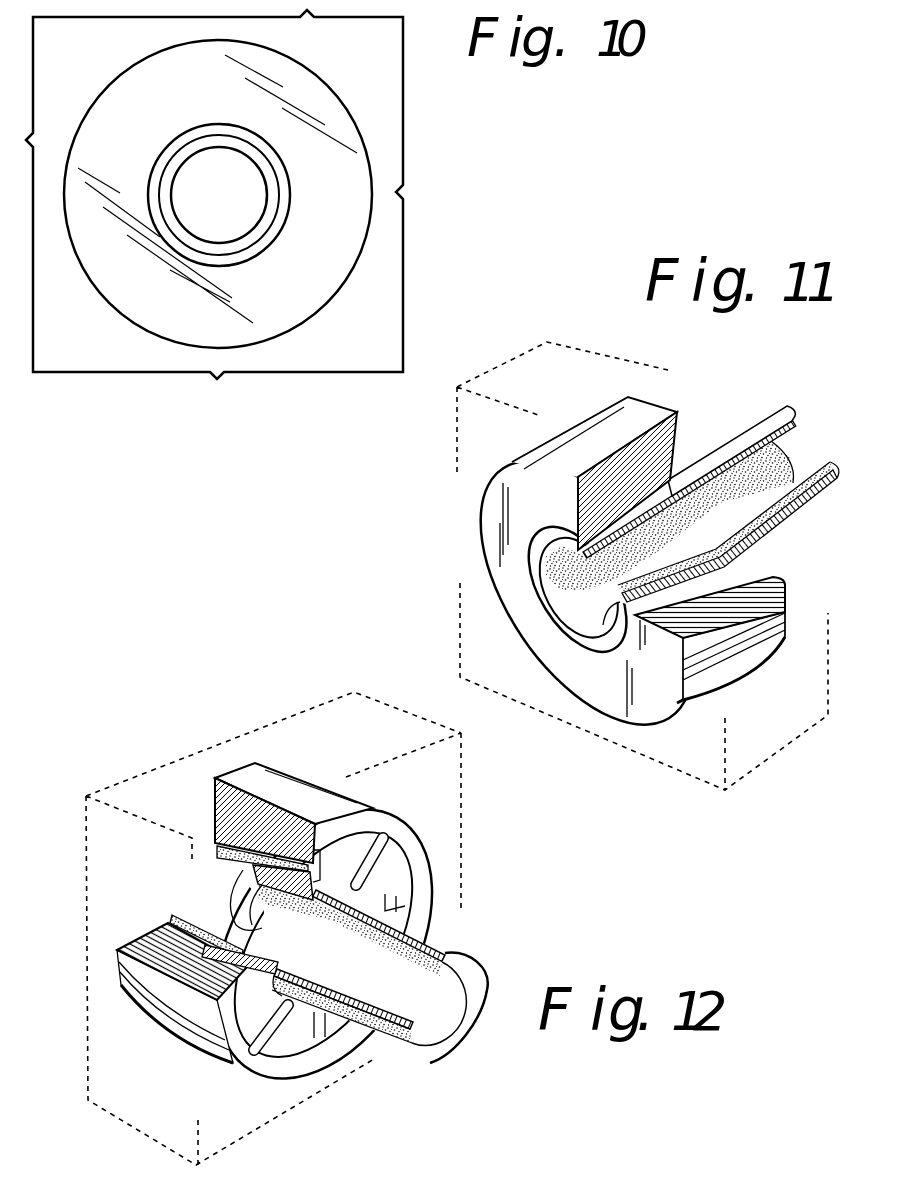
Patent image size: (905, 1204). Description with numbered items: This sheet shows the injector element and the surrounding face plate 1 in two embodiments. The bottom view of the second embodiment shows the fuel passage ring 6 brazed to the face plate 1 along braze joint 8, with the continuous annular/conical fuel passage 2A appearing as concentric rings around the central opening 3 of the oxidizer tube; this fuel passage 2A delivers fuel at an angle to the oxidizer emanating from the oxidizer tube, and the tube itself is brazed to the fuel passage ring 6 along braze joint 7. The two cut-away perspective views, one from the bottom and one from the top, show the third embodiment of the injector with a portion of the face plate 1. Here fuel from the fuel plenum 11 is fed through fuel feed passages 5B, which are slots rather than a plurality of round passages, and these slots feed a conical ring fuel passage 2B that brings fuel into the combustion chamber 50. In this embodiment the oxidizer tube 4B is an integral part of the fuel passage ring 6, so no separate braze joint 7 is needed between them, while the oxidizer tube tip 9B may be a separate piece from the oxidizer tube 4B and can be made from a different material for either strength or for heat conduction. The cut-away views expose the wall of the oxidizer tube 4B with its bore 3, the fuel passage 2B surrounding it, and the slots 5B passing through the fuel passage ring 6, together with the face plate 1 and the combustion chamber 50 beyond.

In FIG. 10, the face plate 1 is at (90, 373).
In FIG. 11, the face plate 1 is at (500, 695).
In FIG. 12, the face plate 1 is at (155, 1140).
In FIG. 10, the continuous annular/conical fuel passage 2A is at (268, 240).
In FIG. 11, the conical ring fuel passage 2B is at (683, 600).
In FIG. 12, the conical ring fuel passage 2B is at (240, 964).
In FIG. 10, the tube 3 is at (221, 204).
In FIG. 11, the tube 3 is at (812, 470).
In FIG. 12, the tube 3 is at (446, 1030).
In FIG. 11, the oxidizer tube 4B is at (697, 448).
In FIG. 12, the oxidizer tube 4B is at (301, 1029).
In FIG. 11, the fuel feed passages 5B is at (747, 577).
In FIG. 12, the fuel feed passages 5B is at (366, 891).
In FIG. 10, the fuel passage ring 6 is at (222, 104).
In FIG. 11, the fuel passage ring 6 is at (492, 555).
In FIG. 12, the fuel passage ring 6 is at (265, 1069).
In FIG. 12, the braze joint 7 is at (330, 850).
In FIG. 10, the braze joint 8 is at (103, 302).
In FIG. 11, the braze joint 8 is at (597, 420).
In FIG. 11, the oxidizer tube tip 9B is at (625, 590).
In FIG. 12, the oxidizer tube tip 9B is at (224, 861).
In FIG. 12, the fuel plenum 11 is at (454, 1126).
In FIG. 12, the combustion chamber 50 is at (182, 734).